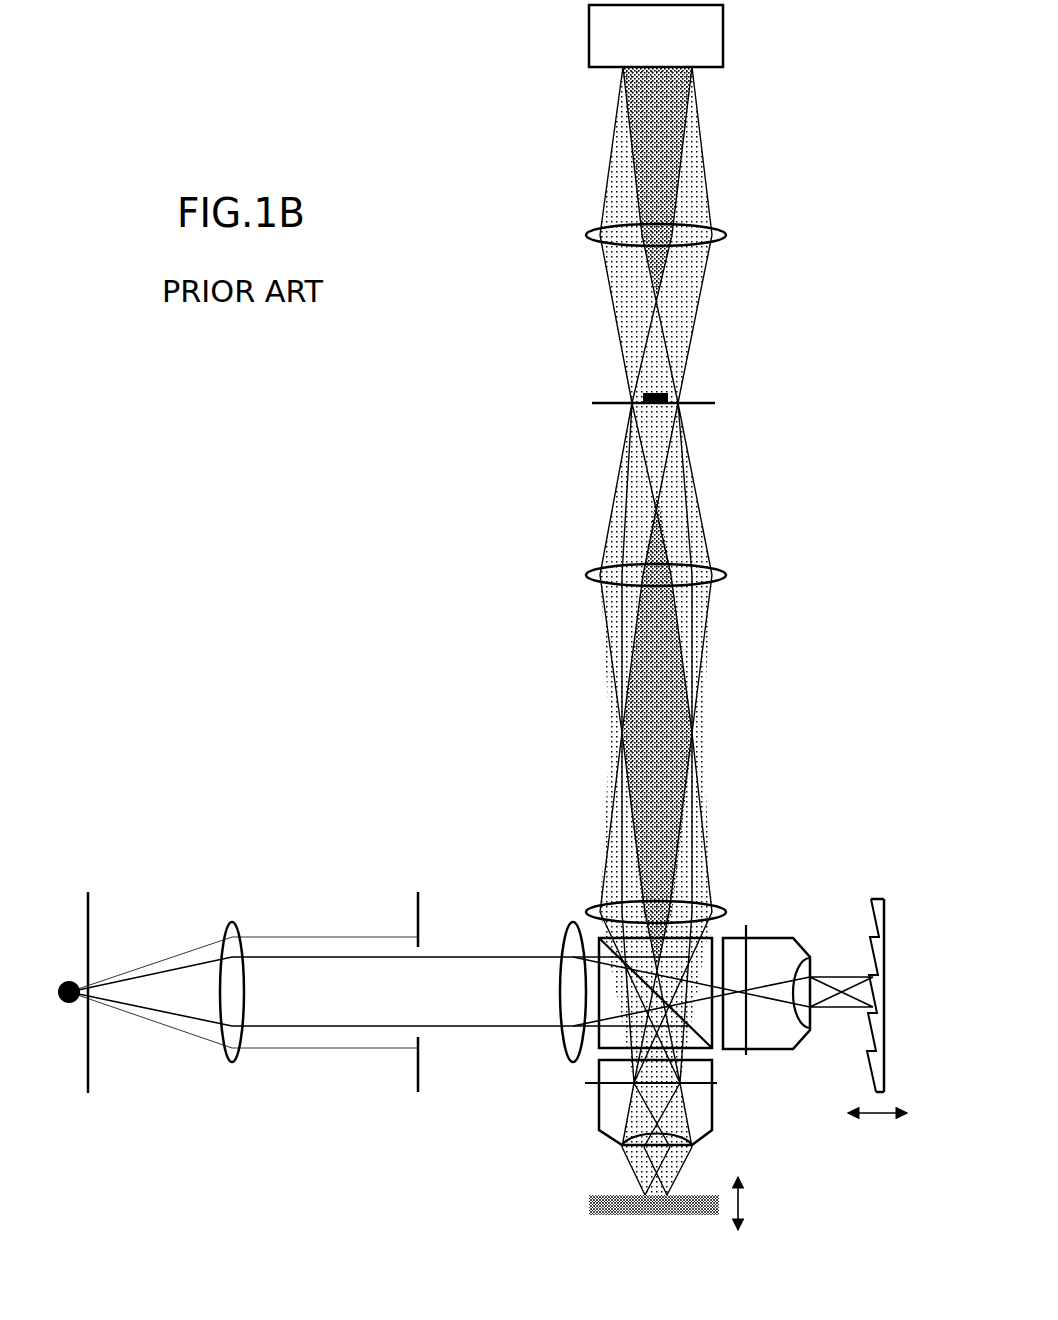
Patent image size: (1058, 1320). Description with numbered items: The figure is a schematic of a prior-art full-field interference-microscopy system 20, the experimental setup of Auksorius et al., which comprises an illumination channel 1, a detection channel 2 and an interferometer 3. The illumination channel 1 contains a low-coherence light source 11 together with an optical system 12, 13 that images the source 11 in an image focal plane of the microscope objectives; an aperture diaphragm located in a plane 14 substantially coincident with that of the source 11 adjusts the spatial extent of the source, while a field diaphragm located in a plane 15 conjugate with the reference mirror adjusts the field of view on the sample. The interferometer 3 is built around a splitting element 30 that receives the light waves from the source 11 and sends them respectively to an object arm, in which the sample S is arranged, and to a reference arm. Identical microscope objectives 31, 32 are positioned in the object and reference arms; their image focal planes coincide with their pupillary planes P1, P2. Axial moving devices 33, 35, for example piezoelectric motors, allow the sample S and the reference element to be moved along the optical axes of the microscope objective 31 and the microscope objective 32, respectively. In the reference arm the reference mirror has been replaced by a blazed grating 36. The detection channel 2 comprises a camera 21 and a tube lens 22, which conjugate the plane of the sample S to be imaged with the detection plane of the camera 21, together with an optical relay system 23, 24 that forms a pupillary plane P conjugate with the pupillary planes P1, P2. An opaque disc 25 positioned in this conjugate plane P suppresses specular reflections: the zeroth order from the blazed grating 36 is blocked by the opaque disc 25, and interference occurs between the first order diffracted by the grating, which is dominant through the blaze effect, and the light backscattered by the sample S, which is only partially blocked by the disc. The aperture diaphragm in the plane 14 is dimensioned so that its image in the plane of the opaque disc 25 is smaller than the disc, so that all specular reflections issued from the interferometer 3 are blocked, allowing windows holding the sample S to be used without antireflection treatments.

The illumination channel 1 is at (310, 797).
The detection channel 2 is at (802, 422).
The interferometer 3 is at (525, 1160).
The light source 11 is at (68, 980).
The optical system (first lens) 12 is at (234, 922).
The optical system (second lens) 13 is at (572, 926).
The aperture diaphragm plane 14 is at (88, 903).
The field diaphragm plane 15 is at (418, 892).
The interference-microscopy system 20 is at (343, 491).
The camera 21 is at (722, 45).
The tube lens 22 is at (725, 235).
The optical relay system (first element) 23 is at (725, 575).
The optical relay system (second element) 24 is at (720, 907).
The opaque disc 25 is at (656, 392).
The splitting element 30 is at (718, 940).
The microscope objective (object arm) 31 is at (600, 1098).
The microscope objective (reference arm) 32 is at (790, 935).
The axial moving device 33 is at (745, 1200).
The axial moving device 35 is at (880, 1125).
The blazed grating 36 is at (880, 898).
The pupillary plane P is at (700, 400).
The pupillary plane of the object-arm objective P1 is at (693, 1087).
The pupillary plane of the reference-arm objective P2 is at (750, 1035).
The sample S is at (589, 1203).